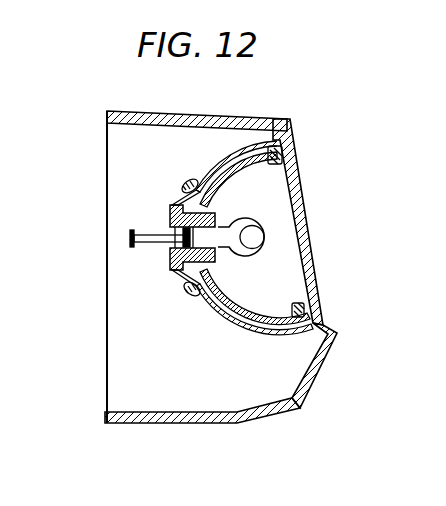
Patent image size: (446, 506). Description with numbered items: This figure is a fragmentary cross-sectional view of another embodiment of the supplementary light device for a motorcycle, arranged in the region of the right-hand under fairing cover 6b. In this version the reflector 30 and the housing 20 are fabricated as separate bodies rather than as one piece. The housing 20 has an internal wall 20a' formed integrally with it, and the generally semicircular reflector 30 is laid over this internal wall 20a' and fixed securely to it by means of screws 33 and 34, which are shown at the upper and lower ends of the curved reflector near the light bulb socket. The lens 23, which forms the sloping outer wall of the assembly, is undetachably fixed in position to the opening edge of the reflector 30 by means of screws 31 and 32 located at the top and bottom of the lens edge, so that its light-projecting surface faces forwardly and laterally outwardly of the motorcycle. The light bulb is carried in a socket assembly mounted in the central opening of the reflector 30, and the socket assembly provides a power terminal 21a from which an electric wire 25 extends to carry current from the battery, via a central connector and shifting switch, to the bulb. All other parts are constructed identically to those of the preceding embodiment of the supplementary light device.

The right-hand under fairing cover 6b is at (254, 113).
The housing 20 is at (166, 423).
The internal wall 20a' is at (223, 267).
The power terminal 21a is at (173, 250).
The lens 23 is at (306, 232).
The electric wire 25 is at (148, 243).
The reflector 30 is at (273, 320).
The screw 31 is at (284, 152).
The screw 32 is at (313, 290).
The screw 33 is at (190, 188).
The screw 34 is at (189, 290).